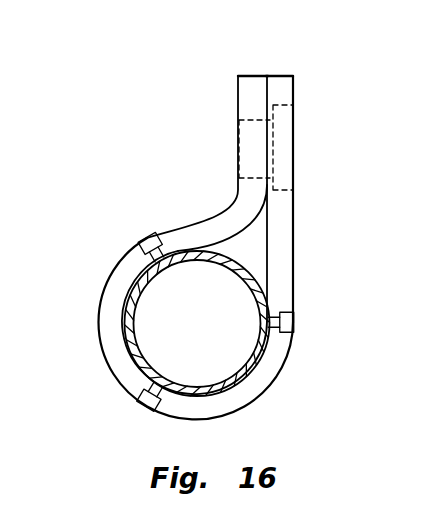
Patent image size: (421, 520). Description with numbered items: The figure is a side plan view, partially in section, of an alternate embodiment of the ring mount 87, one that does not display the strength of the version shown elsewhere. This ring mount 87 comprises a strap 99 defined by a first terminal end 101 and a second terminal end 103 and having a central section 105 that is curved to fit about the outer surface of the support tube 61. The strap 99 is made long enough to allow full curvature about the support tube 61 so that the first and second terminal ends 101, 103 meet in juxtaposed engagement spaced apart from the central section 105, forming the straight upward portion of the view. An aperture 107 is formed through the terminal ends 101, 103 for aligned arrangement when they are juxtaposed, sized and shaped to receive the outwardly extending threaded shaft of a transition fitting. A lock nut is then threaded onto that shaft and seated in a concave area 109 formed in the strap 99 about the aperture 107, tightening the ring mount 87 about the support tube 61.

The support tube 61 is at (267, 372).
The ring mount 87 is at (282, 265).
The strap 99 is at (217, 226).
The first terminal end 101 is at (250, 82).
The second terminal end 103 is at (279, 82).
The central section 105 is at (120, 367).
The aperture 107 is at (245, 142).
The concave area 109 is at (282, 132).